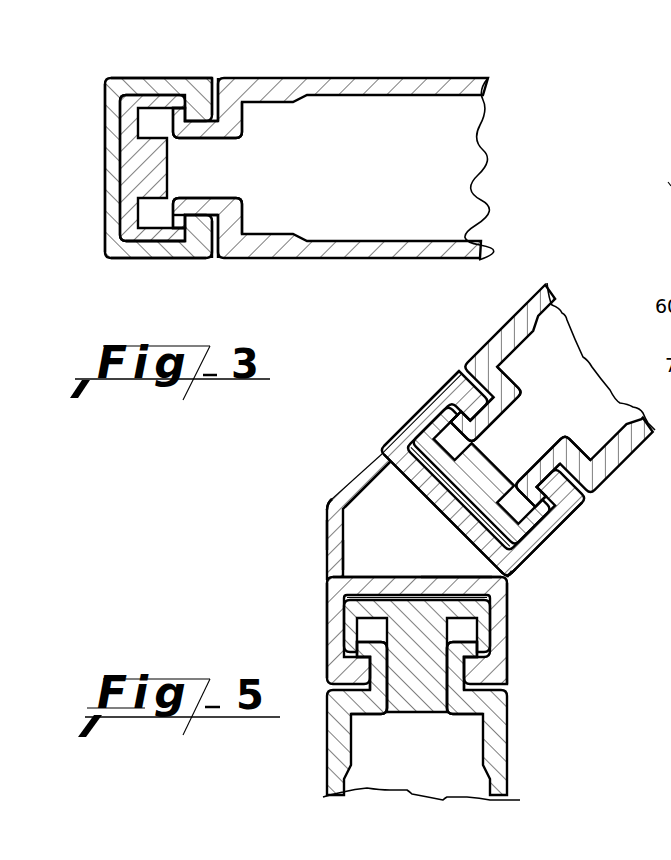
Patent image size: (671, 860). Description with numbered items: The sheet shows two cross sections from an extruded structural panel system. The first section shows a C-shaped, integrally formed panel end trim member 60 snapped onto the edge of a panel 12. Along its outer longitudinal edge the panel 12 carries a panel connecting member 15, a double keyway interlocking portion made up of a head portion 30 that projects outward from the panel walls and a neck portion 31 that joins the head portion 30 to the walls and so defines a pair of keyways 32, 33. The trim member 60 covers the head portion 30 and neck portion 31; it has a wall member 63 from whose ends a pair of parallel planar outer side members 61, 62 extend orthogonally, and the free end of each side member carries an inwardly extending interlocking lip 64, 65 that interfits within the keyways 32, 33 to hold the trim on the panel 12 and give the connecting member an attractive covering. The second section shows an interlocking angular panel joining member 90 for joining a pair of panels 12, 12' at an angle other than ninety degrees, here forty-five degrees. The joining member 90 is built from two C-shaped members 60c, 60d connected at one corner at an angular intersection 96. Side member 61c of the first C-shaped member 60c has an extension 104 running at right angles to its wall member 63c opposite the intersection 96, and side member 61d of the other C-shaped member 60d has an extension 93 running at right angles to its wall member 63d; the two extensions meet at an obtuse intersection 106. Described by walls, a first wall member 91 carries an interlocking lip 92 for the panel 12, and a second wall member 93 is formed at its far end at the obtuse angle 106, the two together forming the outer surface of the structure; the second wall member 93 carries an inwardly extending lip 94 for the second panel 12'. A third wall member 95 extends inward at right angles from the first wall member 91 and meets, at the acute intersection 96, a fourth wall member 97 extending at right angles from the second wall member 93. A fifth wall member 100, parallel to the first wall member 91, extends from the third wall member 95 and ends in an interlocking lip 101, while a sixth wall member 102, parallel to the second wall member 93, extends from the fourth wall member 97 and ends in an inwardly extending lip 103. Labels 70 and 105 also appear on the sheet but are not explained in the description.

In FIG. 3, the panel 12 is at (333, 189).
In FIG. 5, the panel 12 is at (550, 400).
In FIG. 5, the second panel 12' is at (387, 721).
In FIG. 3, the panel connecting member 15 is at (163, 90).
In FIG. 3, the head portion 30 is at (160, 238).
In FIG. 3, the neck portion 31 is at (188, 222).
In FIG. 3, the keyway 32 is at (215, 78).
In FIG. 3, the keyway 33 is at (212, 258).
In FIG. 3, the panel end trim member 60 is at (103, 150).
In FIG. 3, the outer side member 61 is at (150, 77).
In FIG. 3, the outer side member 62 is at (132, 256).
In FIG. 3, the wall member 63 is at (110, 203).
In FIG. 3, the interlocking lip 64 is at (216, 121).
In FIG. 3, the interlocking lip 65 is at (213, 226).
In FIG. 5, the C-shaped member 60c is at (410, 413).
In FIG. 5, the side member 61c is at (433, 398).
In FIG. 5, the wall member 63c is at (430, 493).
In FIG. 5, the C-shaped member 60d is at (325, 627).
In FIG. 5, the side member 61d is at (332, 565).
In FIG. 5, the wall member 63d is at (423, 583).
In FIG. 5, the frame member 70 is at (670, 186).
In FIG. 5, the angular panel joining member 90 is at (325, 500).
In FIG. 5, the first wall member 91 is at (393, 450).
In FIG. 5, the interlocking lip 92 is at (473, 400).
In FIG. 5, the second wall member 93 is at (332, 553).
In FIG. 5, the interlocking lip 94 is at (350, 675).
In FIG. 5, the third wall member 95 is at (503, 567).
In FIG. 5, the intersection 96 is at (515, 592).
In FIG. 5, the fourth wall member 97 is at (395, 580).
In FIG. 5, the fifth wall member 100 is at (543, 533).
In FIG. 5, the interlocking lip 101 is at (560, 487).
In FIG. 5, the sixth wall member 102 is at (503, 647).
In FIG. 5, the interlocking lip 103 is at (480, 678).
In FIG. 5, the extension 104 is at (360, 473).
In FIG. 5, the side wall 105 is at (332, 537).
In FIG. 5, the obtuse intersection 106 is at (336, 496).